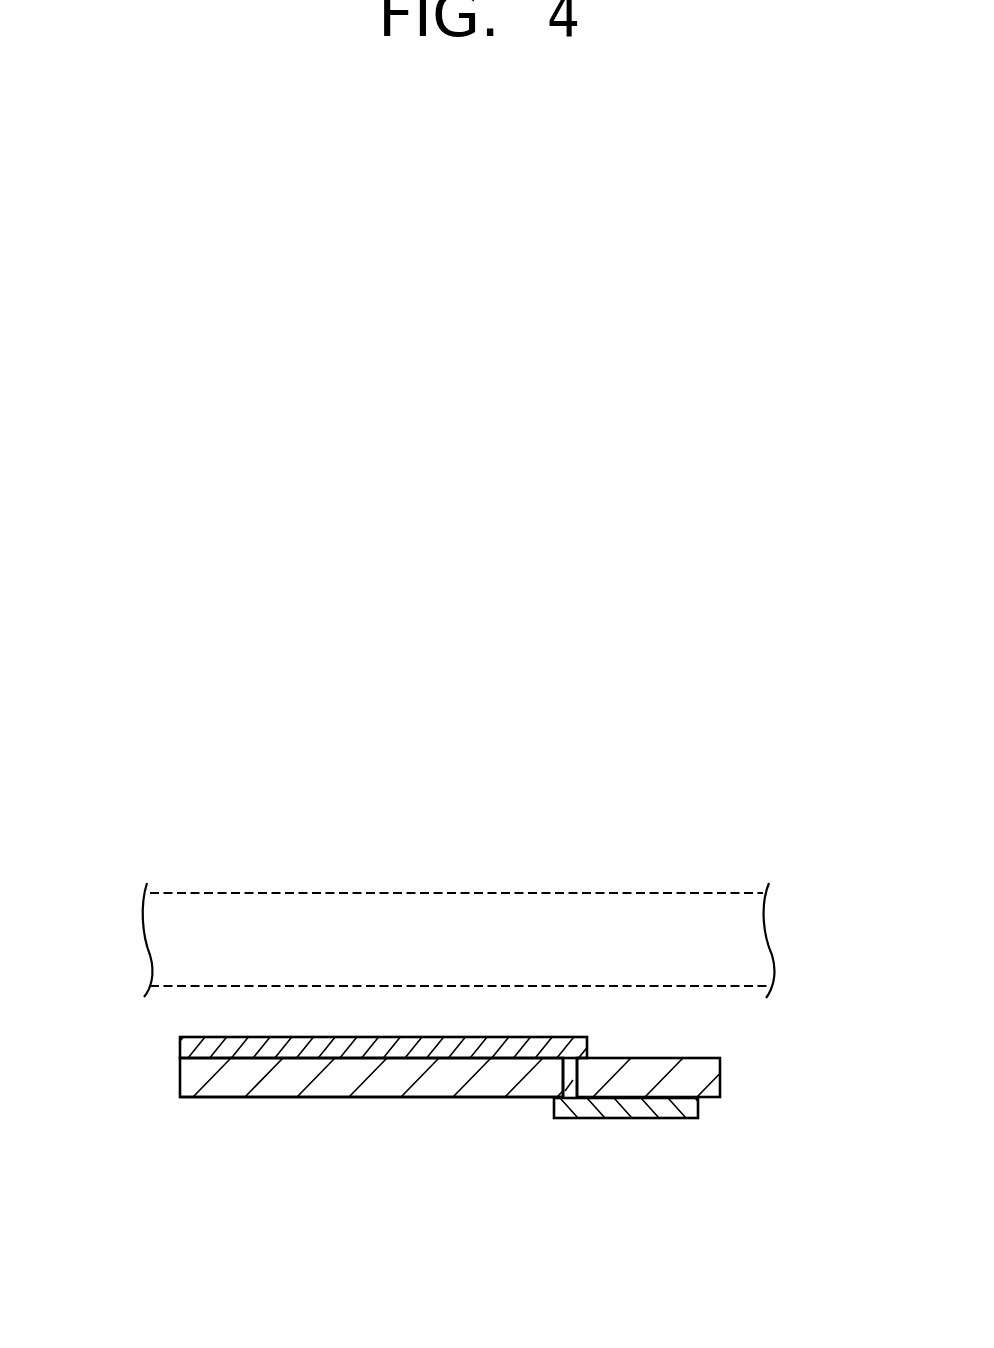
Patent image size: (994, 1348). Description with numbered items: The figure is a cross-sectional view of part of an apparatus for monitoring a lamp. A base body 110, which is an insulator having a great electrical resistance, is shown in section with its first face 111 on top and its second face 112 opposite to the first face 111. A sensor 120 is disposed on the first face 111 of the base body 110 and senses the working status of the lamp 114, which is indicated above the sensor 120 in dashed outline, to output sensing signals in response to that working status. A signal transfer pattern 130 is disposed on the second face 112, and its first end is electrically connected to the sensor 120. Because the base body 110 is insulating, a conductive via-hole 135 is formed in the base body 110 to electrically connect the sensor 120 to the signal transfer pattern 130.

The base body 110 is at (263, 1108).
The first face 111 is at (707, 1057).
The second face 112 is at (445, 1098).
The lamp 114 is at (395, 893).
The sensor 120 is at (205, 1037).
The signal transfer pattern 130 is at (630, 1120).
The conductive via-hole 135 is at (572, 1080).